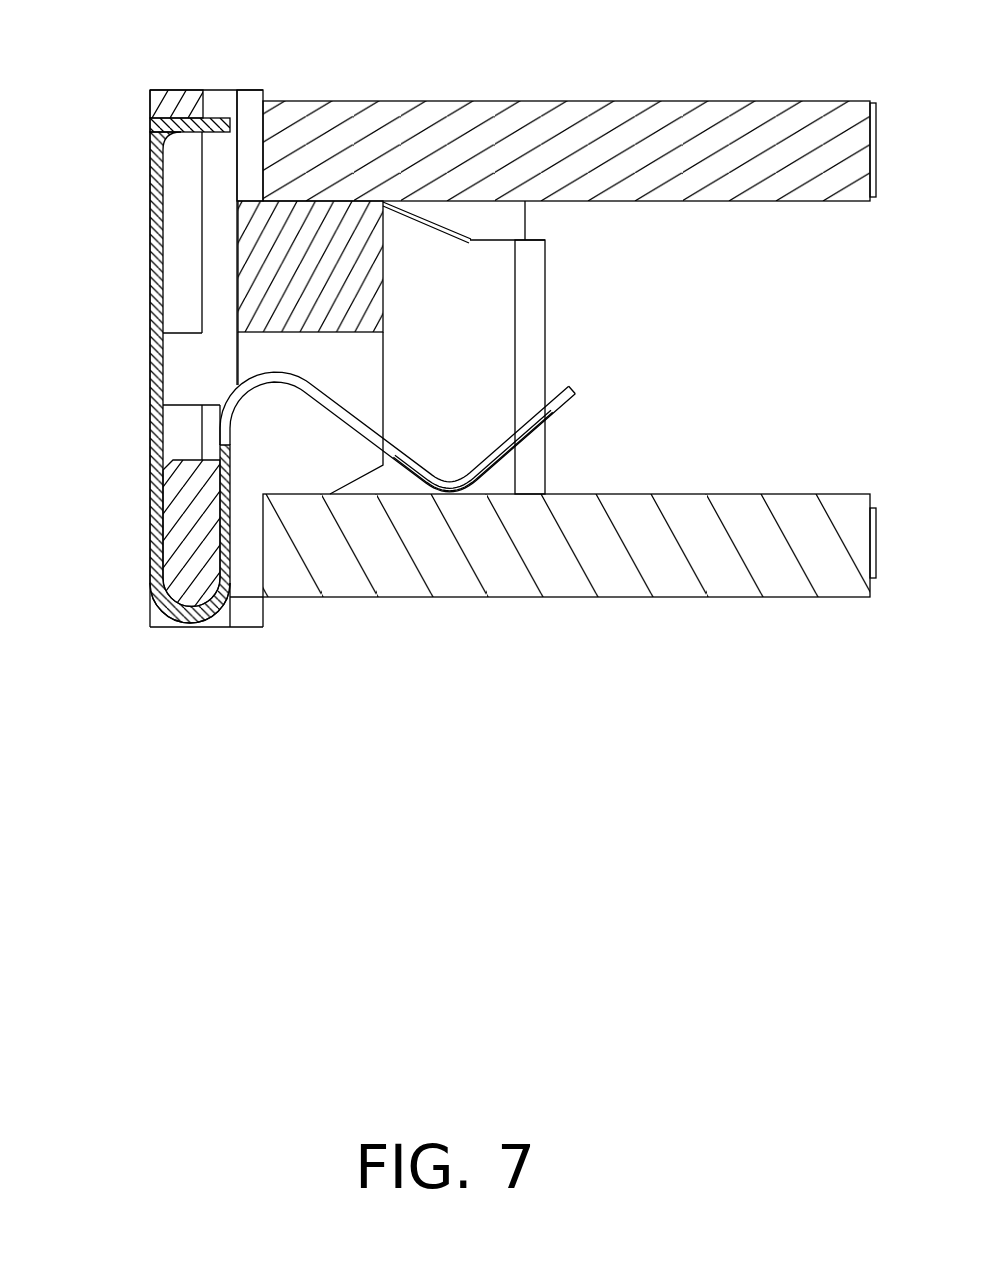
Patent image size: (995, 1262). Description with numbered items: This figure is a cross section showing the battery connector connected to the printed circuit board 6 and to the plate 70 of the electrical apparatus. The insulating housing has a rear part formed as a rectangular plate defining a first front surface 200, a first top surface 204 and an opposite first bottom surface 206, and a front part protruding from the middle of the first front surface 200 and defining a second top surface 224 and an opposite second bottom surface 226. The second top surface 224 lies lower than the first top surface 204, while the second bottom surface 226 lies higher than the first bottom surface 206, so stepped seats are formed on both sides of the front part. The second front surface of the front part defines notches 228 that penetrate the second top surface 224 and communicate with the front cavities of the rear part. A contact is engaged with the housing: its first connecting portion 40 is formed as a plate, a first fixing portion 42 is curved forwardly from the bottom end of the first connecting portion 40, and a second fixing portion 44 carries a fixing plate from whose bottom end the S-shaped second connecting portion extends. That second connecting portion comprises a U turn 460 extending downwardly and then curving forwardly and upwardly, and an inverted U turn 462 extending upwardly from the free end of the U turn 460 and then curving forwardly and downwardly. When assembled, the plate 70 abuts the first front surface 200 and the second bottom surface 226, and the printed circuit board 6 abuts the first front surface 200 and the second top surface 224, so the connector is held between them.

The printed circuit board 6 is at (772, 570).
The first connecting portion 40 is at (150, 404).
The first fixing portion 42 is at (218, 126).
The second fixing portion 44 is at (160, 611).
The plate of the electrical apparatus 70 is at (760, 117).
The first front surface 200 is at (273, 152).
The first top surface 204 is at (168, 628).
The first bottom surface 206 is at (163, 90).
The second top surface 224 is at (323, 495).
The second bottom surface 226 is at (350, 200).
The notch 228 is at (268, 355).
The U turn 460 is at (290, 373).
The inverted U turn 462 is at (475, 467).